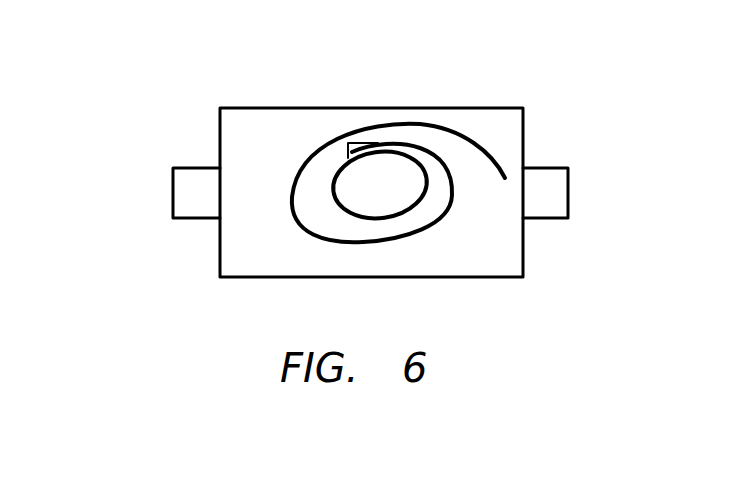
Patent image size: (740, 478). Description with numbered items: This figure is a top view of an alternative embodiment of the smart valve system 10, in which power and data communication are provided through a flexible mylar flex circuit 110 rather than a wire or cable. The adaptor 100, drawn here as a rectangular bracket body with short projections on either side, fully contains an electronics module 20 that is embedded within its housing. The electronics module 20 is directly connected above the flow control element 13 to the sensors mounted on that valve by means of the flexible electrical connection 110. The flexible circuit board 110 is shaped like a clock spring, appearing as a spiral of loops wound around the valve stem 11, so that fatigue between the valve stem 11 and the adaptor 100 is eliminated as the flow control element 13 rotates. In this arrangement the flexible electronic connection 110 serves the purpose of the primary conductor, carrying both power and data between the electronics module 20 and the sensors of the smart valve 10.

The smart valve system 10 is at (133, 60).
The adaptor 100 is at (220, 147).
The flow control element 13 is at (569, 192).
The flexible mylar flex circuit 110 is at (443, 127).
The valve stem 11 is at (412, 210).
The electronics module 20 is at (353, 142).